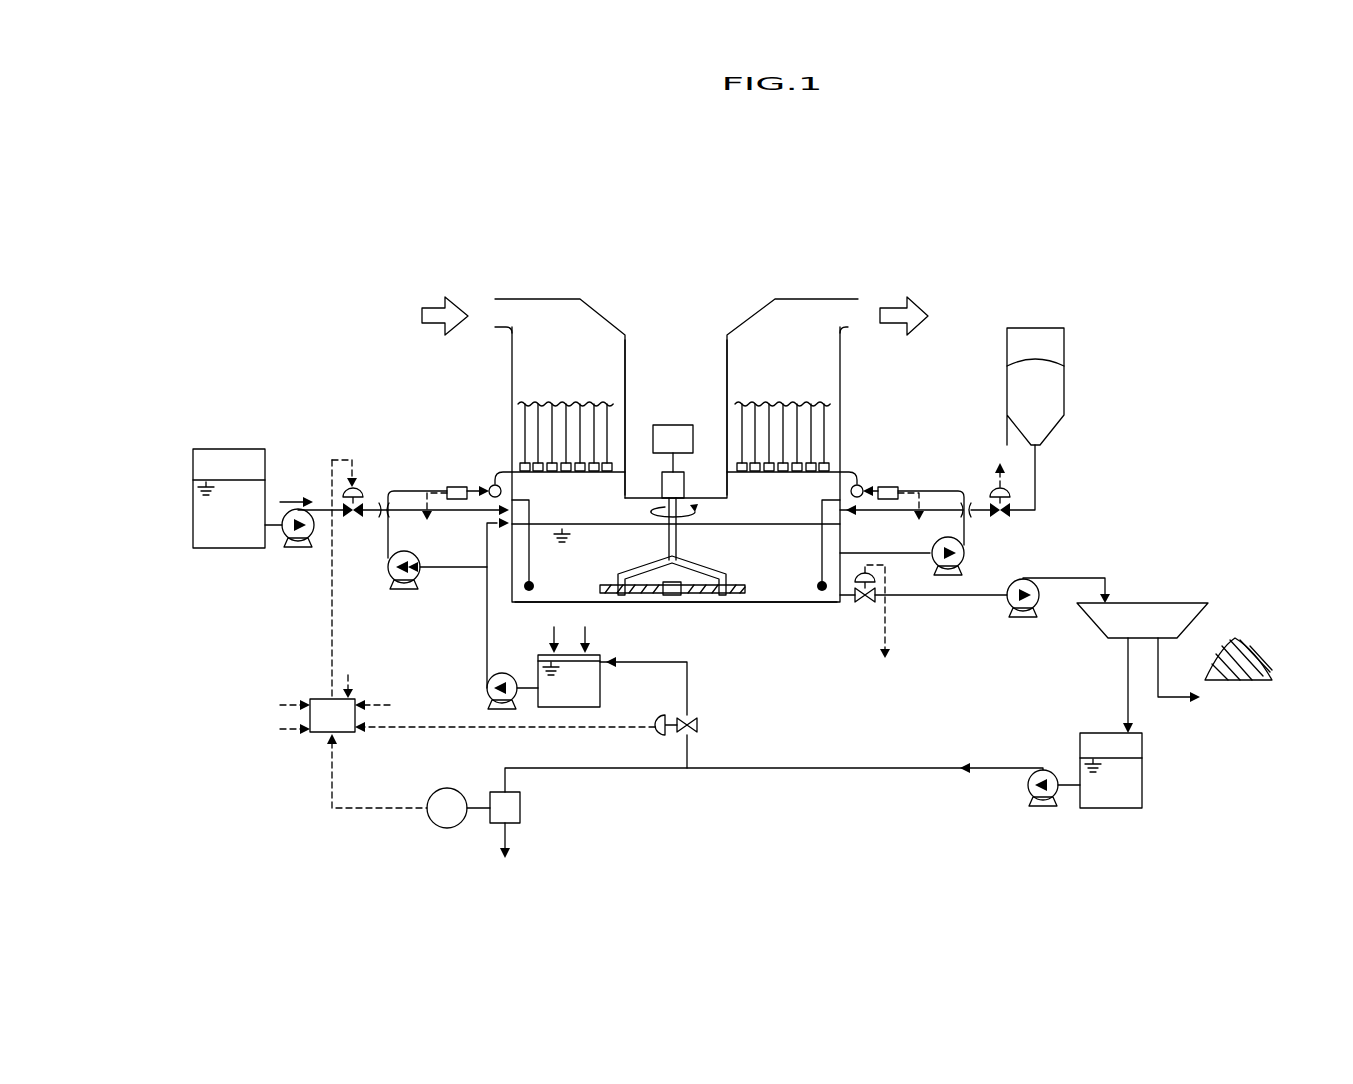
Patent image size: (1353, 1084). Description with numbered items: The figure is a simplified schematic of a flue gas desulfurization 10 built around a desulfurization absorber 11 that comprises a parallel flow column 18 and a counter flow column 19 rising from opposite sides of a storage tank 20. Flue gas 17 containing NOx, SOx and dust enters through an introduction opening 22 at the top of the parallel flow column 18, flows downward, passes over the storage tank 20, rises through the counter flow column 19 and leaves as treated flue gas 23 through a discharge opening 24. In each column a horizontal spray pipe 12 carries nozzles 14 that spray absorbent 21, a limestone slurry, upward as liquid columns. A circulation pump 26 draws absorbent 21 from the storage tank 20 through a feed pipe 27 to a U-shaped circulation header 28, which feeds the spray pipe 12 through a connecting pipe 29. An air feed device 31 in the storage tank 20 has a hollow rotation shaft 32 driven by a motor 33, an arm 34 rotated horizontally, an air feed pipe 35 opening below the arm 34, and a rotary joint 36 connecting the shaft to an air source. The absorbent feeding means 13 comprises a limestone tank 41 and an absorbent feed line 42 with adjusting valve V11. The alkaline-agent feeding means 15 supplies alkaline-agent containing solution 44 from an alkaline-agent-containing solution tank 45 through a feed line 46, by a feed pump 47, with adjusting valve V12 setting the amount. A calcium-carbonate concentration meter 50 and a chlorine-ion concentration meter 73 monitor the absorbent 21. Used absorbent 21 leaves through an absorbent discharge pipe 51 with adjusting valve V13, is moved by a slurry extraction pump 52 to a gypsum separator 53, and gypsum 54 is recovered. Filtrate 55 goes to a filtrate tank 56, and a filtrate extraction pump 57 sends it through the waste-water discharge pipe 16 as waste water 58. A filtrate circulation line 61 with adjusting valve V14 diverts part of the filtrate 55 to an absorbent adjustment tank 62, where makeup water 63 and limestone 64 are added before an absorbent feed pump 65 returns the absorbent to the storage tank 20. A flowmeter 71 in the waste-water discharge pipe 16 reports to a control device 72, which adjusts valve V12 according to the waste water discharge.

The flue gas desulfurization 10 is at (878, 206).
The desulfurization absorber 11 is at (625, 322).
The spray pipe 12 is at (826, 422).
The absorbent feeding means 13 is at (1116, 373).
The nozzle 14 is at (864, 407).
The alkaline-agent feeding means 15 is at (213, 404).
The waste-water discharge pipe 16 is at (818, 771).
The flue gas 17 is at (447, 297).
The parallel flow column 18 is at (626, 378).
The counter flow column 19 is at (726, 378).
The storage tank 20 is at (638, 475).
The absorbent 21 is at (518, 410).
The introduction opening 22 is at (498, 312).
The treated flue gas 23 is at (928, 305).
The discharge opening 24 is at (858, 313).
The circulation pump 26 is at (390, 577).
The feed pipe 27 is at (388, 540).
The circulation header 28 is at (487, 523).
The connecting pipe 29 is at (492, 485).
The air feed device 31 is at (647, 612).
The hollow rotation shaft 32 is at (677, 540).
The motor 33 is at (676, 425).
The arm 34 is at (705, 593).
The air feed pipe 35 is at (743, 594).
The rotary joint 36 is at (684, 478).
The limestone tank 41 is at (1064, 383).
The absorbent feed line 42 is at (1035, 480).
The alkaline-agent containing solution 44 is at (295, 500).
The alkaline-agent-containing solution tank 45 is at (232, 449).
The alkaline-agent-containing solution feed line 46 is at (325, 510).
The alkaline-agent-containing solution feed pump 47 is at (300, 548).
The calcium-carbonate concentration meter 50 is at (455, 487).
The absorbent discharge pipe 51 is at (908, 602).
The slurry extraction pump 52 is at (1006, 606).
The gypsum separator 53 is at (1166, 603).
The gypsum 54 is at (1221, 683).
The filtrate 55 is at (1126, 662).
The filtrate tank 56 is at (1142, 790).
The filtrate extraction pump 57 is at (1030, 795).
The waste water 58 is at (505, 853).
The filtrate circulation line 61 is at (689, 690).
The absorbent adjustment tank 62 is at (600, 680).
The makeup water 63 is at (550, 633).
The limestone 64 is at (589, 633).
The absorbent feed pump 65 is at (487, 692).
The flowmeter 71 is at (447, 788).
The control device 72 is at (318, 699).
The chlorine-ion concentration meter 73 is at (890, 488).
The adjusting valve V11 is at (992, 495).
The adjusting valve V12 is at (362, 494).
The adjusting valve V13 is at (866, 604).
The adjusting valve V14 is at (700, 730).